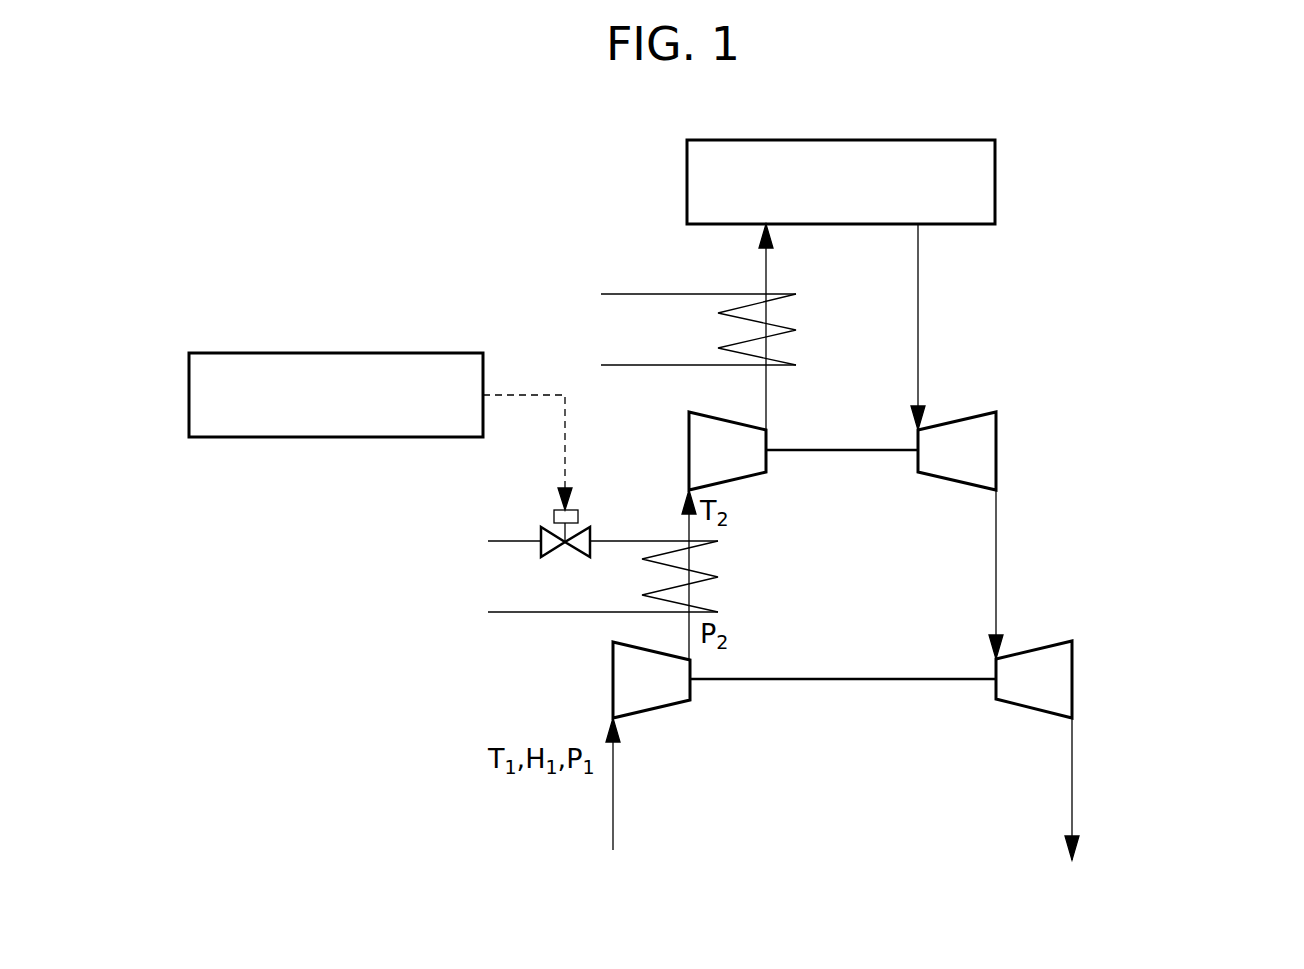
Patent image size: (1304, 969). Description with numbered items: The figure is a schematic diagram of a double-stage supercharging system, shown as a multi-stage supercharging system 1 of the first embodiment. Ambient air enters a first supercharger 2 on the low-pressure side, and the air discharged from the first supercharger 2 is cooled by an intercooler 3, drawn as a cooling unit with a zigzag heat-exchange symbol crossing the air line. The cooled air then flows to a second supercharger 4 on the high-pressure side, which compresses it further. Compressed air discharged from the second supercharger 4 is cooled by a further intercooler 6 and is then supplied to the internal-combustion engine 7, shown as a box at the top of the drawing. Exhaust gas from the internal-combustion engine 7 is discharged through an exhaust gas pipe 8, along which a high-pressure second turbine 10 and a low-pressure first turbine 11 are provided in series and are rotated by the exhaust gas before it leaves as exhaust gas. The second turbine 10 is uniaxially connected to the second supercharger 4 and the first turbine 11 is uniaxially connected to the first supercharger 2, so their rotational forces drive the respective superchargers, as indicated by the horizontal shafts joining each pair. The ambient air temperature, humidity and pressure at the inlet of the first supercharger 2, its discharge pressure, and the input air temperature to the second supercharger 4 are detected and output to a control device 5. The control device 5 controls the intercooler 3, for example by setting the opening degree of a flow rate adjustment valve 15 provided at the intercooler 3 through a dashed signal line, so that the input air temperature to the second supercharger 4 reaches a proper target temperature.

The multi-stage supercharging system 1 is at (1195, 250).
The first supercharger 2 is at (665, 718).
The intercooler 3 is at (527, 614).
The second supercharger 4 is at (689, 447).
The control device 5 is at (341, 353).
The intercooler 6 is at (633, 293).
The internal-combustion engine 7 is at (995, 179).
The exhaust gas pipe 8 is at (918, 276).
The second turbine 10 is at (968, 412).
The first turbine 11 is at (1052, 641).
The flow rate adjustment valve 15 is at (543, 528).